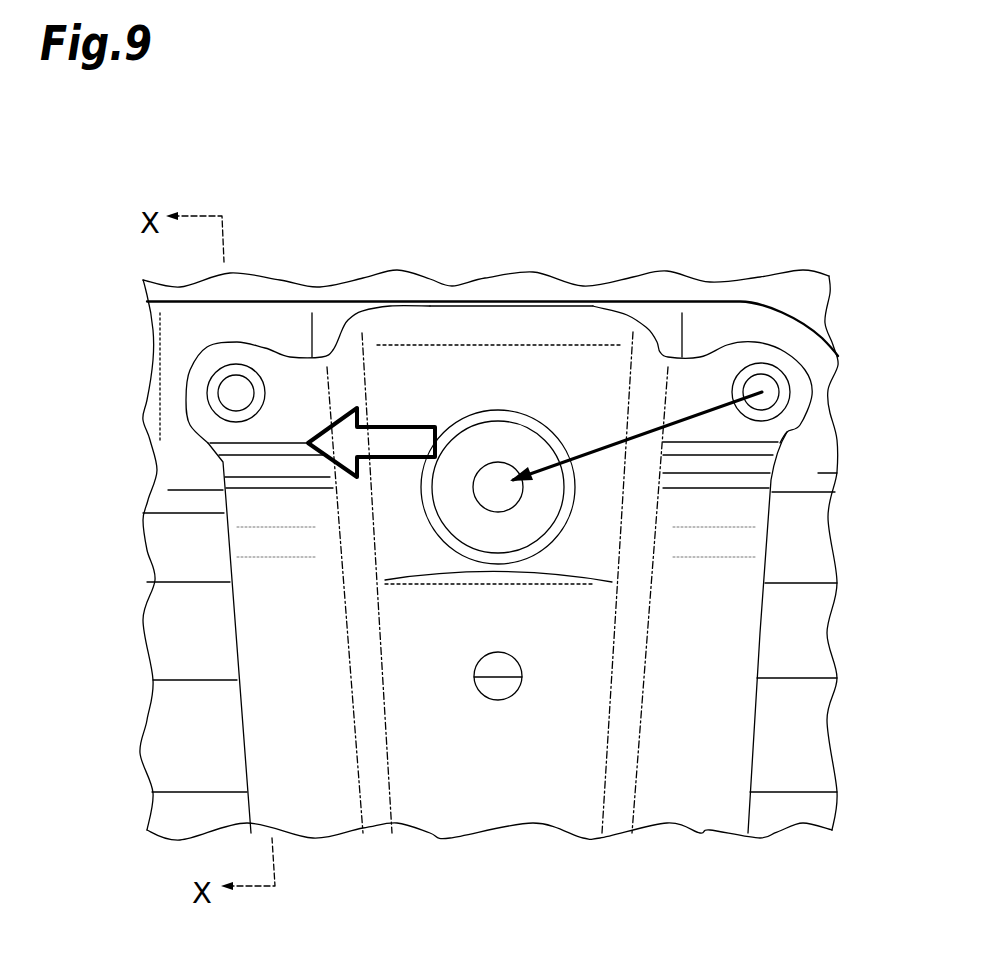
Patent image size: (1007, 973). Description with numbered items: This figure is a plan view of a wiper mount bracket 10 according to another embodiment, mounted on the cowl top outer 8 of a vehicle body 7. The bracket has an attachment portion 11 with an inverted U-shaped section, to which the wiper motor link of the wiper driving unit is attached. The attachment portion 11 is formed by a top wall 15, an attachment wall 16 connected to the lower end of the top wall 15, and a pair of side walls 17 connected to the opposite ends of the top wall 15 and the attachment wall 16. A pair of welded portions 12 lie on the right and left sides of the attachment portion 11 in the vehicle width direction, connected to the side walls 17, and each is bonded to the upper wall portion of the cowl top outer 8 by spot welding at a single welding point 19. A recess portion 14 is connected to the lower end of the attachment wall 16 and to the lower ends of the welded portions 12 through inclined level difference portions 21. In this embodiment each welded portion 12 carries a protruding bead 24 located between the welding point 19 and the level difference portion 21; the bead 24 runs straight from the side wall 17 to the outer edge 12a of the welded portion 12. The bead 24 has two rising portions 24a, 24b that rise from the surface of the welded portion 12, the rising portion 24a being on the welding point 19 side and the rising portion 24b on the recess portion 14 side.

The vehicle body 7 is at (812, 270).
The cowl top outer 8 is at (160, 630).
The wiper mount bracket 10 is at (404, 297).
The attachment portion 11 is at (518, 297).
The welded portion 12 is at (297, 376).
The outer edge 12a is at (222, 504).
The recess portion 14 is at (327, 820).
The top wall 15 is at (462, 323).
The attachment wall 16 is at (573, 363).
The side wall 17 is at (345, 345).
The welding point 19 is at (223, 393).
The level difference portion 21 is at (290, 543).
The bead 24 is at (222, 463).
The rising portion 24a is at (277, 443).
The rising portion 24b is at (287, 480).